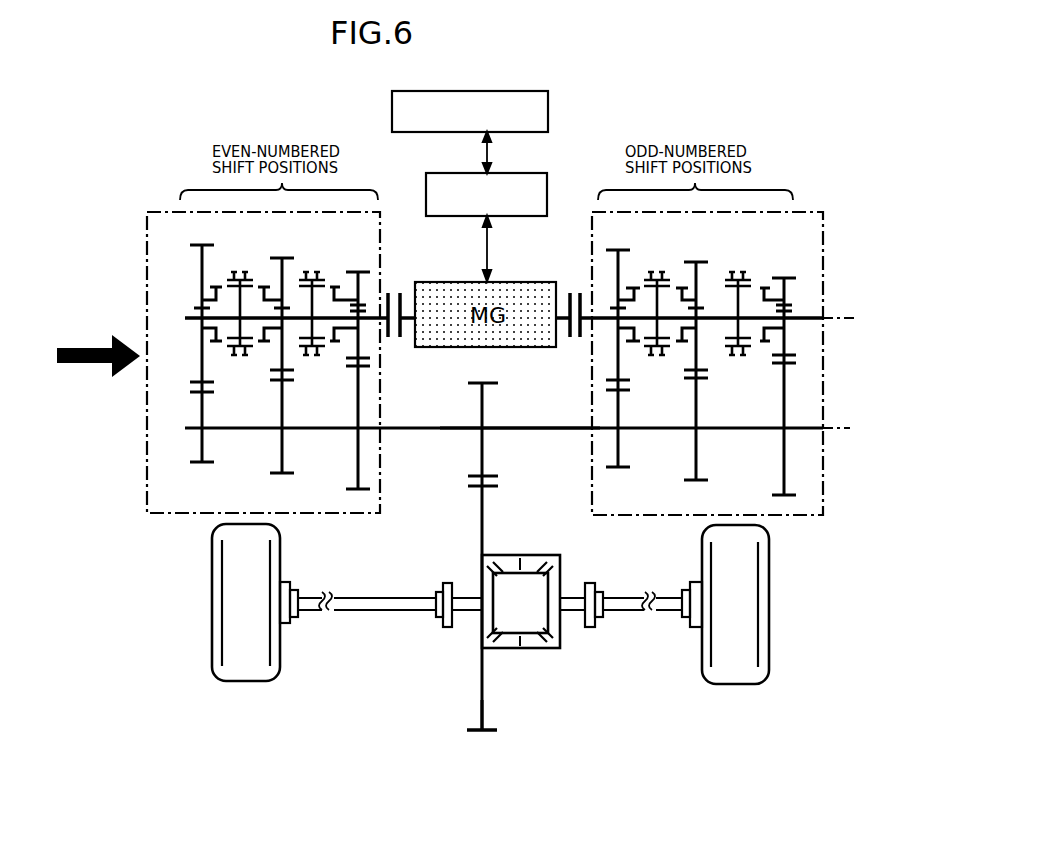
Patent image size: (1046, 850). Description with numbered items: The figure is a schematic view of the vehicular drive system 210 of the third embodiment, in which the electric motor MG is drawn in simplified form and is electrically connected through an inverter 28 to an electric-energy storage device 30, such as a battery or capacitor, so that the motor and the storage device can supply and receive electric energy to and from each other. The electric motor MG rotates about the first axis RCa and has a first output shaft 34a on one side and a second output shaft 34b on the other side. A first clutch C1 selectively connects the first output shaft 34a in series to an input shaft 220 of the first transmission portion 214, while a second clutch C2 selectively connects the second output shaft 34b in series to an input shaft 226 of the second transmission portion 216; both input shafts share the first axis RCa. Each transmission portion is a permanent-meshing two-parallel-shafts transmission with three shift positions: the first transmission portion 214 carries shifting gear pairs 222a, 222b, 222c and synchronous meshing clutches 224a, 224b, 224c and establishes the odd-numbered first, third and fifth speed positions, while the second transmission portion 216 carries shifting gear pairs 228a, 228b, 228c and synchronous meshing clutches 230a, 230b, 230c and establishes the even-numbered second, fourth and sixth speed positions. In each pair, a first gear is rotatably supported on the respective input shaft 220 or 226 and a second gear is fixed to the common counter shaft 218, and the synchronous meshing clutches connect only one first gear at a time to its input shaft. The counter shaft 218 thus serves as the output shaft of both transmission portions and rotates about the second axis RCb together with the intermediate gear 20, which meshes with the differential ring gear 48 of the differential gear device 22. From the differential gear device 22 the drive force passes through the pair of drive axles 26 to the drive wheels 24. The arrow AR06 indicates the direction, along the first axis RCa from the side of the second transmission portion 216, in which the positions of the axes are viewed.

The vehicular drive system 210 is at (820, 120).
The electric-energy storage device 30 is at (548, 105).
The inverter 28 is at (547, 192).
The second transmission portion 216 is at (170, 212).
The first transmission portion 214 is at (807, 217).
The shifting gear pair 228c is at (201, 241).
The shifting gear pair 228b is at (281, 253).
The shifting gear pair 228a is at (357, 267).
The input shaft 226 is at (198, 328).
The synchronous meshing clutch 230c is at (218, 360).
The synchronous meshing clutch 230b is at (262, 355).
The synchronous meshing clutch 230a is at (331, 358).
The second clutch C2 is at (393, 288).
The first clutch C1 is at (577, 288).
The second output shaft 34b is at (407, 323).
The first output shaft 34a is at (562, 325).
The intermediate gear 20 is at (490, 383).
The counter shaft 218 is at (527, 423).
The shifting gear pair 222c is at (620, 245).
The shifting gear pair 222b is at (697, 253).
The shifting gear pair 222a is at (785, 264).
The synchronous meshing clutch 224c is at (634, 360).
The synchronous meshing clutch 224b is at (678, 360).
The synchronous meshing clutch 224a is at (761, 360).
The input shaft 220 is at (803, 328).
The differential gear device 22 is at (521, 674).
The drive axle 26 is at (352, 606).
The drive wheel 24 is at (238, 673).
The differential ring gear 48 is at (477, 735).
The arrow AR06 is at (92, 342).
The first axis RCa is at (850, 303).
The second axis RCb is at (850, 415).